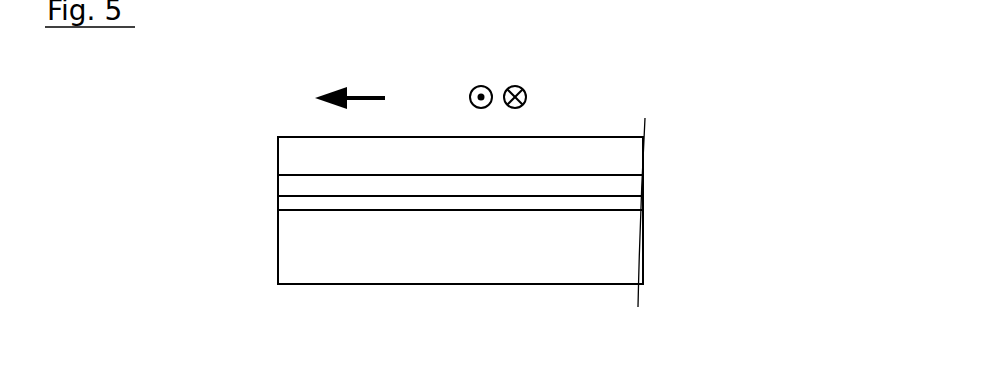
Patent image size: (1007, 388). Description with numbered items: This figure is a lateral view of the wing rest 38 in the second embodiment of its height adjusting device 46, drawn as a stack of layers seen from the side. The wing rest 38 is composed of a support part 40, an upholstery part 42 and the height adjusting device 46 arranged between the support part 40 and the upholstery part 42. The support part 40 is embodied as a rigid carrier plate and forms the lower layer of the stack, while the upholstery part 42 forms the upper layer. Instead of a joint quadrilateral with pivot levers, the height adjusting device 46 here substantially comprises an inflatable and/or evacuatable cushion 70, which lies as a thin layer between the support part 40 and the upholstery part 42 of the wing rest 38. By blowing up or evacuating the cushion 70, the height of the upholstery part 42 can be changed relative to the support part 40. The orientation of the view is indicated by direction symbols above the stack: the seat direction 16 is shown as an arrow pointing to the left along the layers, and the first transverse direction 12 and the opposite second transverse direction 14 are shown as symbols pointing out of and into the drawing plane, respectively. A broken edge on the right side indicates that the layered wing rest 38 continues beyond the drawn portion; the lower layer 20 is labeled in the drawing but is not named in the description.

The first transverse direction 12 is at (468, 97).
The second transverse direction 14 is at (527, 97).
The seat direction 16 is at (365, 97).
The substrate 20 is at (630, 260).
The wing rest 38 is at (268, 152).
The support part 40 is at (627, 202).
The upholstery part 42 is at (582, 155).
The height adjusting device 46 is at (352, 208).
The cushion 70 is at (633, 183).